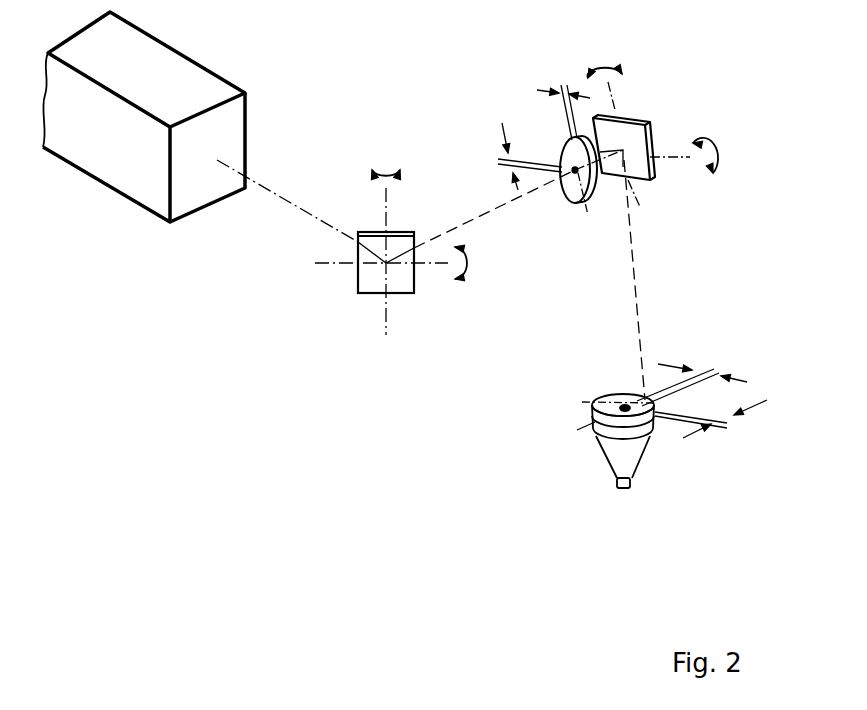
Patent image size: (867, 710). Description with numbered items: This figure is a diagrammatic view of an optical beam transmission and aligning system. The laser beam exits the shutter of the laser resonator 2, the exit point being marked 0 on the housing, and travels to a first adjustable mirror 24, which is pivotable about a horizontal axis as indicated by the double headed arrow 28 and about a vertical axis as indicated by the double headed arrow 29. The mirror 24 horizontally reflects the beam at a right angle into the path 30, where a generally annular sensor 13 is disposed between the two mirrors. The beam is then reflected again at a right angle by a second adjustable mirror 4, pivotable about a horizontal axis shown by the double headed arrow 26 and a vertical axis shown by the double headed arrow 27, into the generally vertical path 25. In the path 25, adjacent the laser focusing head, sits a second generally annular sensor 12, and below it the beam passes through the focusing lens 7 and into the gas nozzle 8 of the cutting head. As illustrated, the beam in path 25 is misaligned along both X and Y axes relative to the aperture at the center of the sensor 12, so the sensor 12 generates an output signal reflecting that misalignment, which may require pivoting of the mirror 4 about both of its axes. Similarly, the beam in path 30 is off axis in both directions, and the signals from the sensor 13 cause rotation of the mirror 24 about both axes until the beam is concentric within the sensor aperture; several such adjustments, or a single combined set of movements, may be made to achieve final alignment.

The laser resonator 2 is at (155, 60).
The laser beam exit point 0 is at (280, 196).
The mirror 24 is at (398, 278).
The double headed arrow 29 is at (386, 176).
The double headed arrow 28 is at (473, 265).
The path 30 is at (490, 212).
The sensor 13 is at (567, 157).
The mirror 4 is at (630, 142).
The double headed arrow 27 is at (607, 58).
The double headed arrow 26 is at (712, 157).
The path 25 is at (638, 313).
The sensor 12 is at (620, 400).
The focusing lens 7 is at (598, 432).
The gas nozzle 8 is at (622, 468).